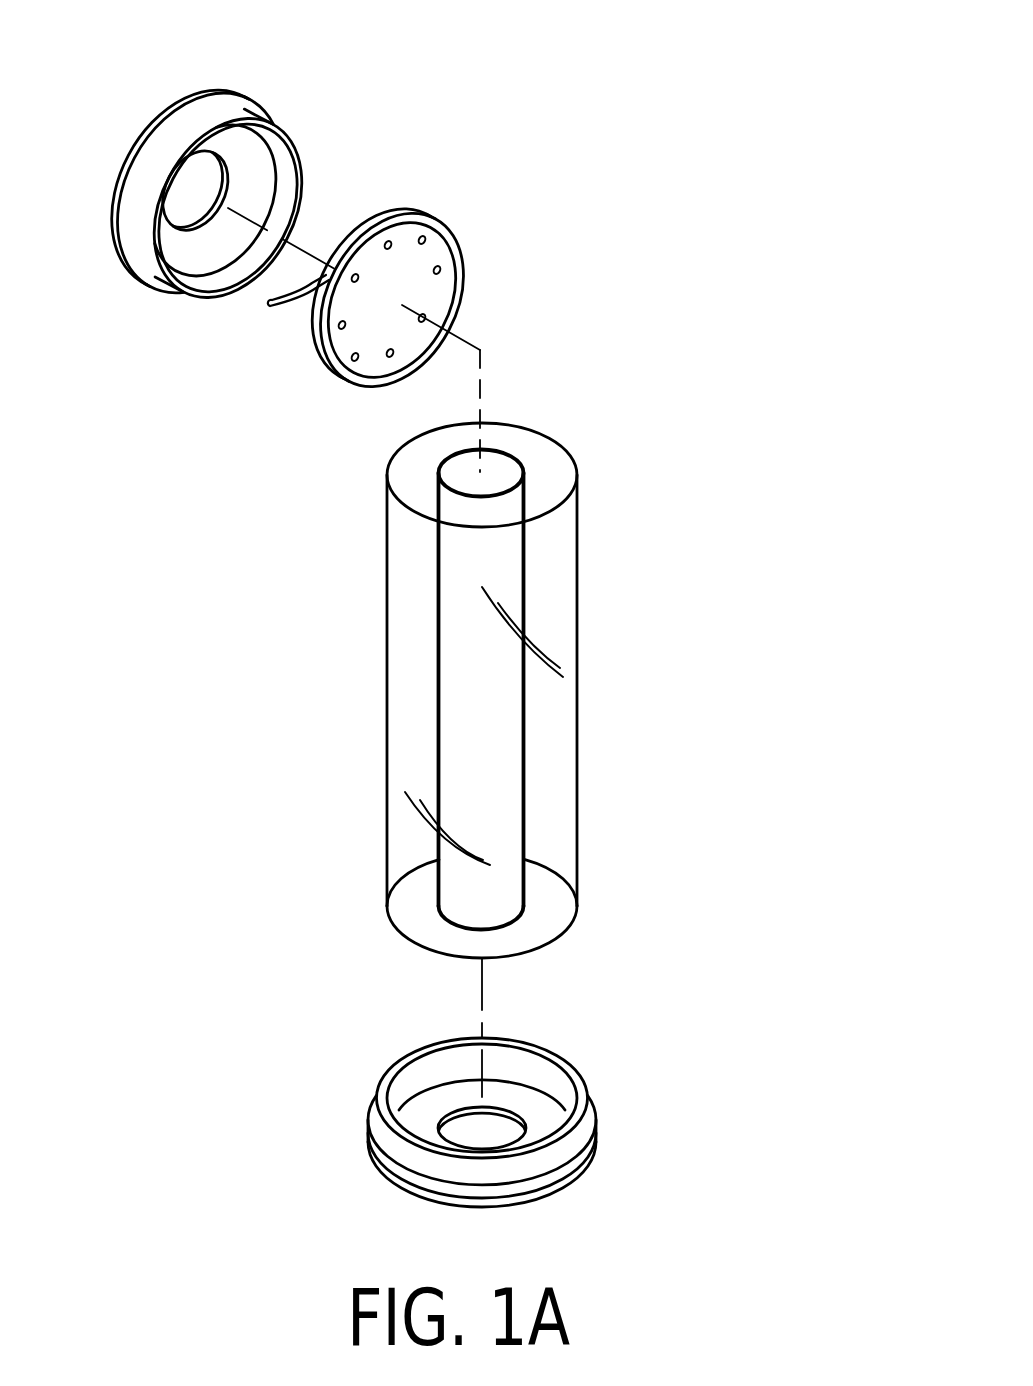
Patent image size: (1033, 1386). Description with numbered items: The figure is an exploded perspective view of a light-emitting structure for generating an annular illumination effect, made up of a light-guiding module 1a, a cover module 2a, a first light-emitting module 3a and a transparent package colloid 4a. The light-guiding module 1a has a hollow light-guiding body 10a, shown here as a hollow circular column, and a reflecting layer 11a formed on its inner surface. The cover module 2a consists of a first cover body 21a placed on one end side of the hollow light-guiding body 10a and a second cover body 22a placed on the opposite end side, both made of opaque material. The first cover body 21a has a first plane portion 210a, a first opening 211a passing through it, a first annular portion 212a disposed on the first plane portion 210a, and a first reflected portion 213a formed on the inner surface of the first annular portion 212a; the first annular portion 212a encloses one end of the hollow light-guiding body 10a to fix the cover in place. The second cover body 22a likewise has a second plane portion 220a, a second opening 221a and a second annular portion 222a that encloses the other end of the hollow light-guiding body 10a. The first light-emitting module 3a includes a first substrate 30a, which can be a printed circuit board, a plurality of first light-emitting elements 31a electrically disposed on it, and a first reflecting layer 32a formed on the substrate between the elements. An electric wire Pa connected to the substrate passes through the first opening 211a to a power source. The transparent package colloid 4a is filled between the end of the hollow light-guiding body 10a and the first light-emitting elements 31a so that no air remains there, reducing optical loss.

The light-guiding module 1a is at (688, 563).
The hollow light-guiding body 10a is at (563, 663).
The reflecting layer 11a is at (525, 597).
The cover module 2a is at (147, 300).
The first cover body 21a is at (472, 138).
The first plane portion 210a is at (272, 118).
The first opening 211a is at (243, 136).
The first annular portion 212a is at (288, 148).
The first reflected portion 213a is at (282, 174).
The second cover body 22a is at (733, 1005).
The second plane portion 220a is at (538, 1100).
The second opening 221a is at (508, 1133).
The second annular portion 222a is at (565, 1148).
The first light-emitting module 3a is at (545, 150).
The first substrate 30a is at (410, 212).
The first light-emitting elements 31a is at (428, 240).
The first reflecting layer 32a is at (418, 272).
The transparent package colloid 4a is at (370, 393).
The electric wire Pa is at (285, 307).